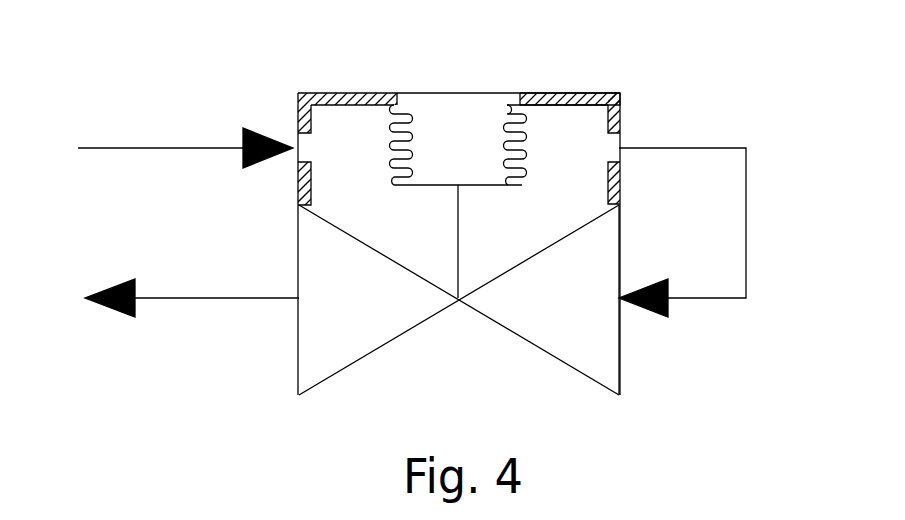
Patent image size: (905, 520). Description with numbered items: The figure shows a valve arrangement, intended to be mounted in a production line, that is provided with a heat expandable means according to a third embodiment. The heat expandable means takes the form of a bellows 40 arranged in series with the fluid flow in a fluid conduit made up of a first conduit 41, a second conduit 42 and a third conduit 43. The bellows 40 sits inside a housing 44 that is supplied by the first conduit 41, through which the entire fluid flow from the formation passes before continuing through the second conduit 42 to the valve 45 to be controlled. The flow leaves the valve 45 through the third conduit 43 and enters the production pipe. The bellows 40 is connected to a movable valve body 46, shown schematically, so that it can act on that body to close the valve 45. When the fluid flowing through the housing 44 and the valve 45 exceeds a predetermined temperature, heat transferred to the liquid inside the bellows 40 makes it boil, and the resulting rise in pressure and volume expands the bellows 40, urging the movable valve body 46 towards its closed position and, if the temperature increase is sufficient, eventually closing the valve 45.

The bellows 40 is at (489, 84).
The first conduit 41 is at (173, 148).
The second conduit 42 is at (688, 148).
The third conduit 43 is at (192, 300).
The housing 44 is at (585, 97).
The valve 45 is at (660, 358).
The movable valve body 46 is at (455, 348).